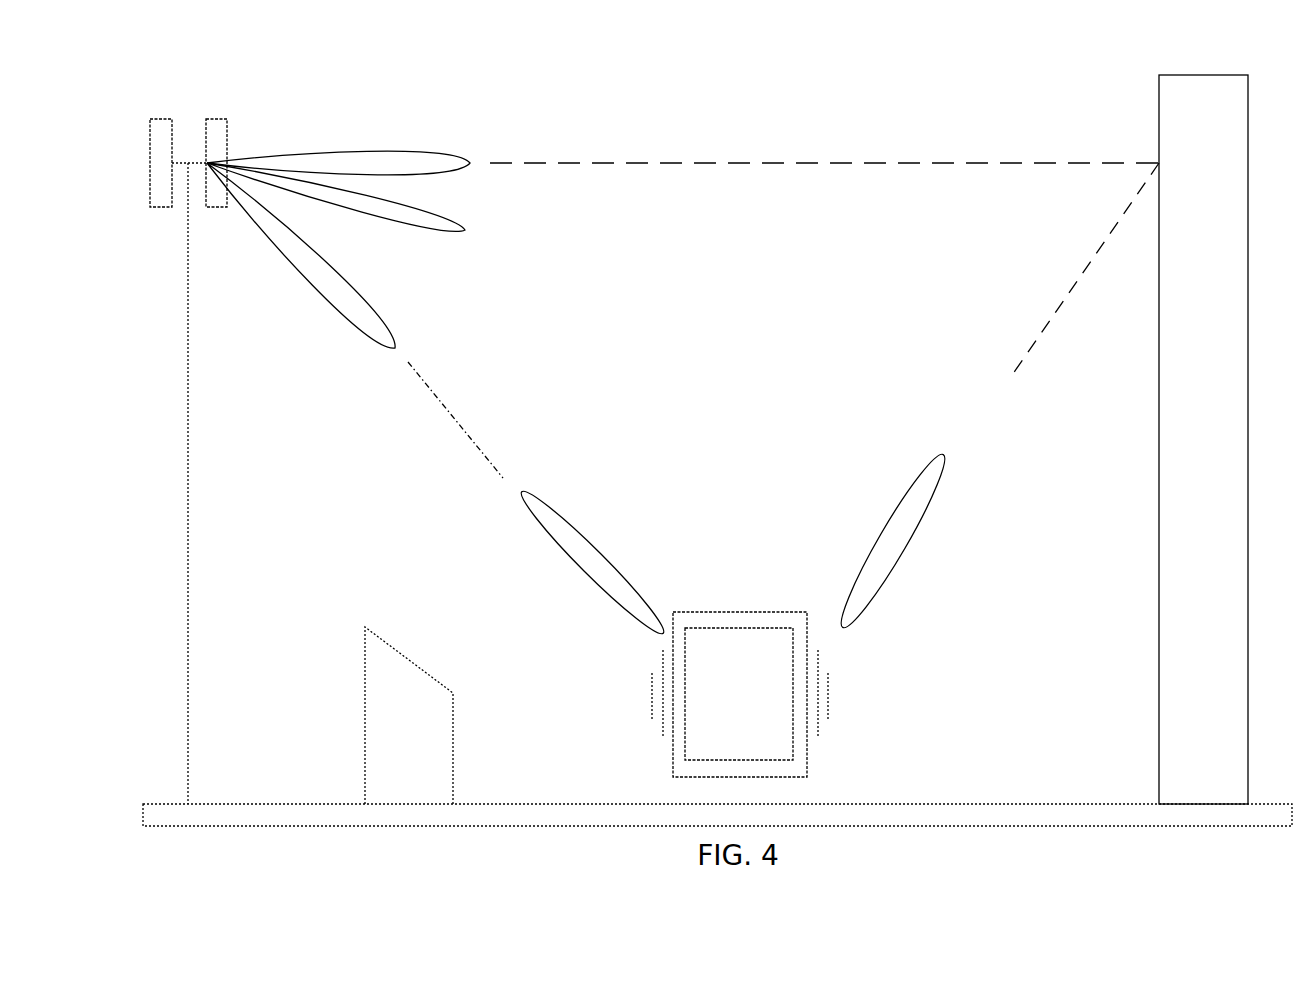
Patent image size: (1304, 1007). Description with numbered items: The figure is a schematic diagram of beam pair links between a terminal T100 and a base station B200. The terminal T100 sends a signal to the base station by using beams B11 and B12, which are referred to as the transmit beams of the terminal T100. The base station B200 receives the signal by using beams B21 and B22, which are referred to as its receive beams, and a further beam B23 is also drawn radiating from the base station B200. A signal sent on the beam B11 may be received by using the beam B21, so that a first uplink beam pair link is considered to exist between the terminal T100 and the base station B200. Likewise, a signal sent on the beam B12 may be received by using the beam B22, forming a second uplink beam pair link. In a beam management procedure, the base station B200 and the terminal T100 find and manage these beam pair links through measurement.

The base station B200 is at (190, 416).
The beam B21 is at (301, 255).
The beam B22 is at (338, 146).
The base station beam B23 is at (336, 211).
The beam B11 is at (592, 562).
The beam B12 is at (893, 541).
The terminal T100 is at (740, 694).